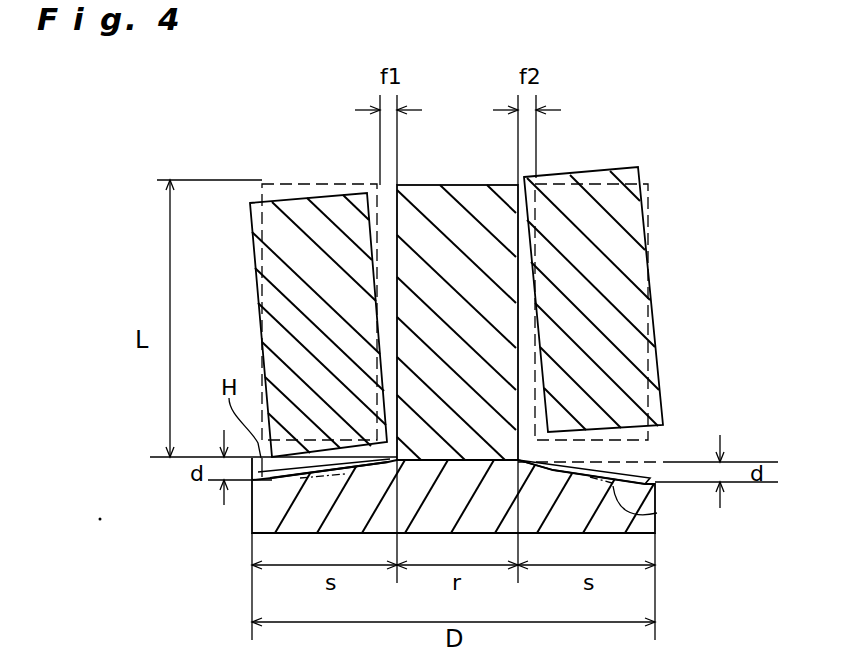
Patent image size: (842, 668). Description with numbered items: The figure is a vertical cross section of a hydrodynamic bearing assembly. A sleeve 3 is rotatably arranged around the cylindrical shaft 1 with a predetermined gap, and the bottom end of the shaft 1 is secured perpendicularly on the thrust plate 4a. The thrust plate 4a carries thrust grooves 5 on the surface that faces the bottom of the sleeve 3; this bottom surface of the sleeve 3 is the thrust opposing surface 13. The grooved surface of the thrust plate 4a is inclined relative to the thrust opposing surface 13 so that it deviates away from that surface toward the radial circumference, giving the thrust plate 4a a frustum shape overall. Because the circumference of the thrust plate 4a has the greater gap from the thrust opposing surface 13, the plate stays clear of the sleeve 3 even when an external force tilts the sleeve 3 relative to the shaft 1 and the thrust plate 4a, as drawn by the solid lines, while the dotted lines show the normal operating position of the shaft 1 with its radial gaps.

The shaft 1 is at (455, 204).
The sleeve 3 is at (636, 216).
The thrust opposing surface 13 is at (652, 425).
The thrust plate 4a is at (263, 517).
The thrust grooves 5 is at (657, 513).